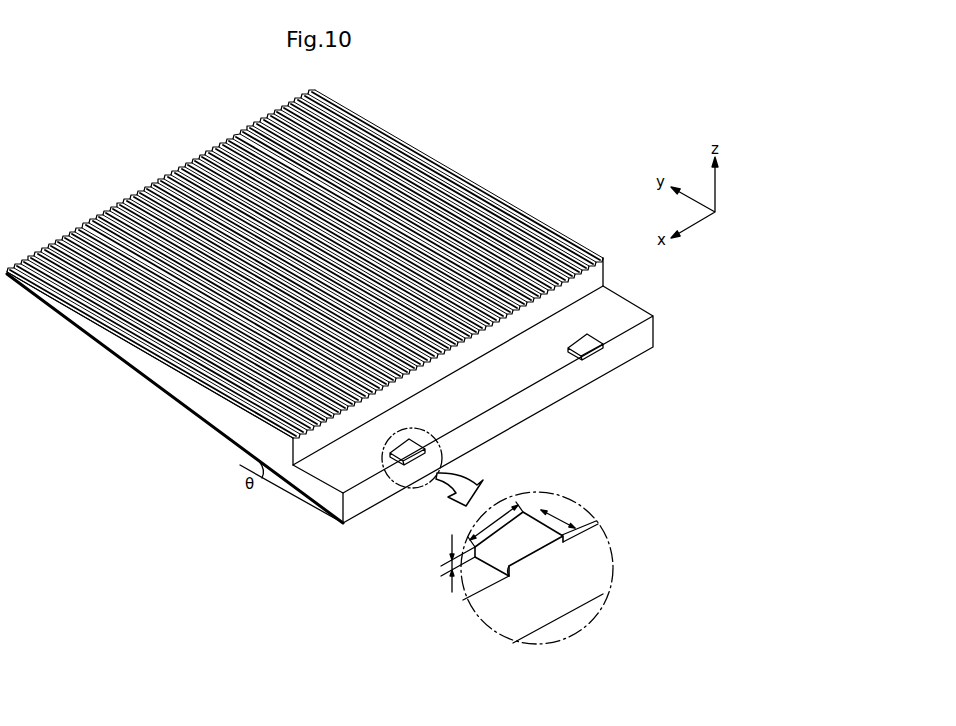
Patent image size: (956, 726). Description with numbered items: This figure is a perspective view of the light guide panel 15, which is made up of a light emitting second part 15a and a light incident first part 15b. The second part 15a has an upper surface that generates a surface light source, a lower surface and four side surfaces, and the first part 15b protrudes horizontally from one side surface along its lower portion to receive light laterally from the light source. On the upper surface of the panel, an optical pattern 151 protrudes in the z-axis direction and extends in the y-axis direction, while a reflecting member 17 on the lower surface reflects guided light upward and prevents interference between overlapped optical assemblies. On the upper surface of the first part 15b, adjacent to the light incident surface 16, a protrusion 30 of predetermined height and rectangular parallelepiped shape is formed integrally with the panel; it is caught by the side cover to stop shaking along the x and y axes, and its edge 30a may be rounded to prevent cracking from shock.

The light guide panel 15 is at (305, 331).
The second part 15a is at (223, 412).
The first part 15b is at (288, 518).
The optical pattern 151 is at (213, 150).
The reflecting member 17 is at (152, 384).
The light incident surface 16 is at (598, 366).
The protrusion 30 is at (595, 337).
The edge 30a is at (489, 560).